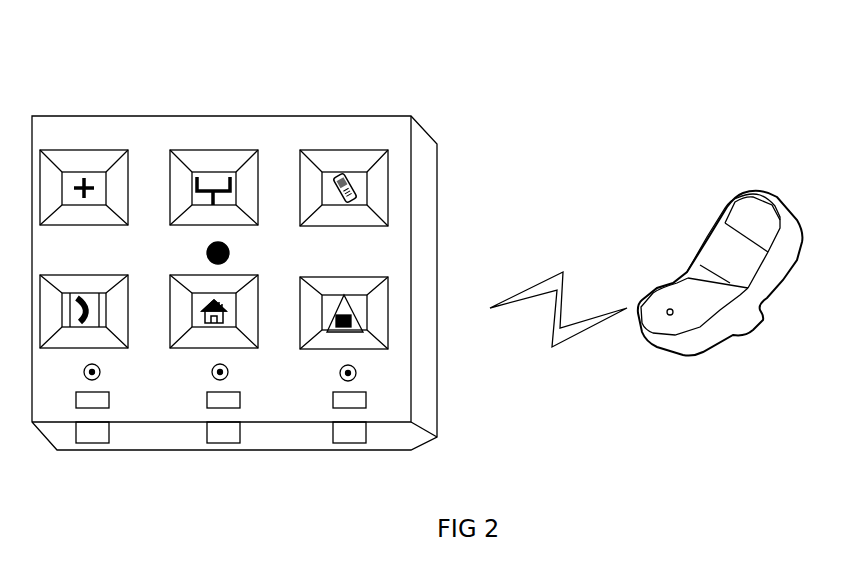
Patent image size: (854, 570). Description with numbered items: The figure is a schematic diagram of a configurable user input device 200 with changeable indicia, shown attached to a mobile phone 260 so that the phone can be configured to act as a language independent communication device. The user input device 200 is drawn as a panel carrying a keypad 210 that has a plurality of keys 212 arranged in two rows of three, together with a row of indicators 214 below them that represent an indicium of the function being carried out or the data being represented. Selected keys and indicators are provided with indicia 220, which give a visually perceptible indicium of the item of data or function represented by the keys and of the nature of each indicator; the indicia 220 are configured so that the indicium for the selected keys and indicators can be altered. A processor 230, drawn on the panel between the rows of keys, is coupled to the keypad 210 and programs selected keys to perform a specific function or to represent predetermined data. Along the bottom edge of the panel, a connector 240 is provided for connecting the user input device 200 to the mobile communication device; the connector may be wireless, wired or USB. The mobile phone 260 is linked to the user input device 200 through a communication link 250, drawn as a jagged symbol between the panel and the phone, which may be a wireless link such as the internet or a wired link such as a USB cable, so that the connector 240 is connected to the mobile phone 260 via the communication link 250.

The user input device 200 is at (367, 103).
The keypad 210 is at (388, 307).
The keys 212 is at (207, 338).
The indicators 214 is at (358, 377).
The indicia 220 is at (388, 173).
The processor 230 is at (236, 257).
The connector 240 is at (102, 430).
The communication link 250 is at (556, 270).
The mobile phone 260 is at (713, 313).